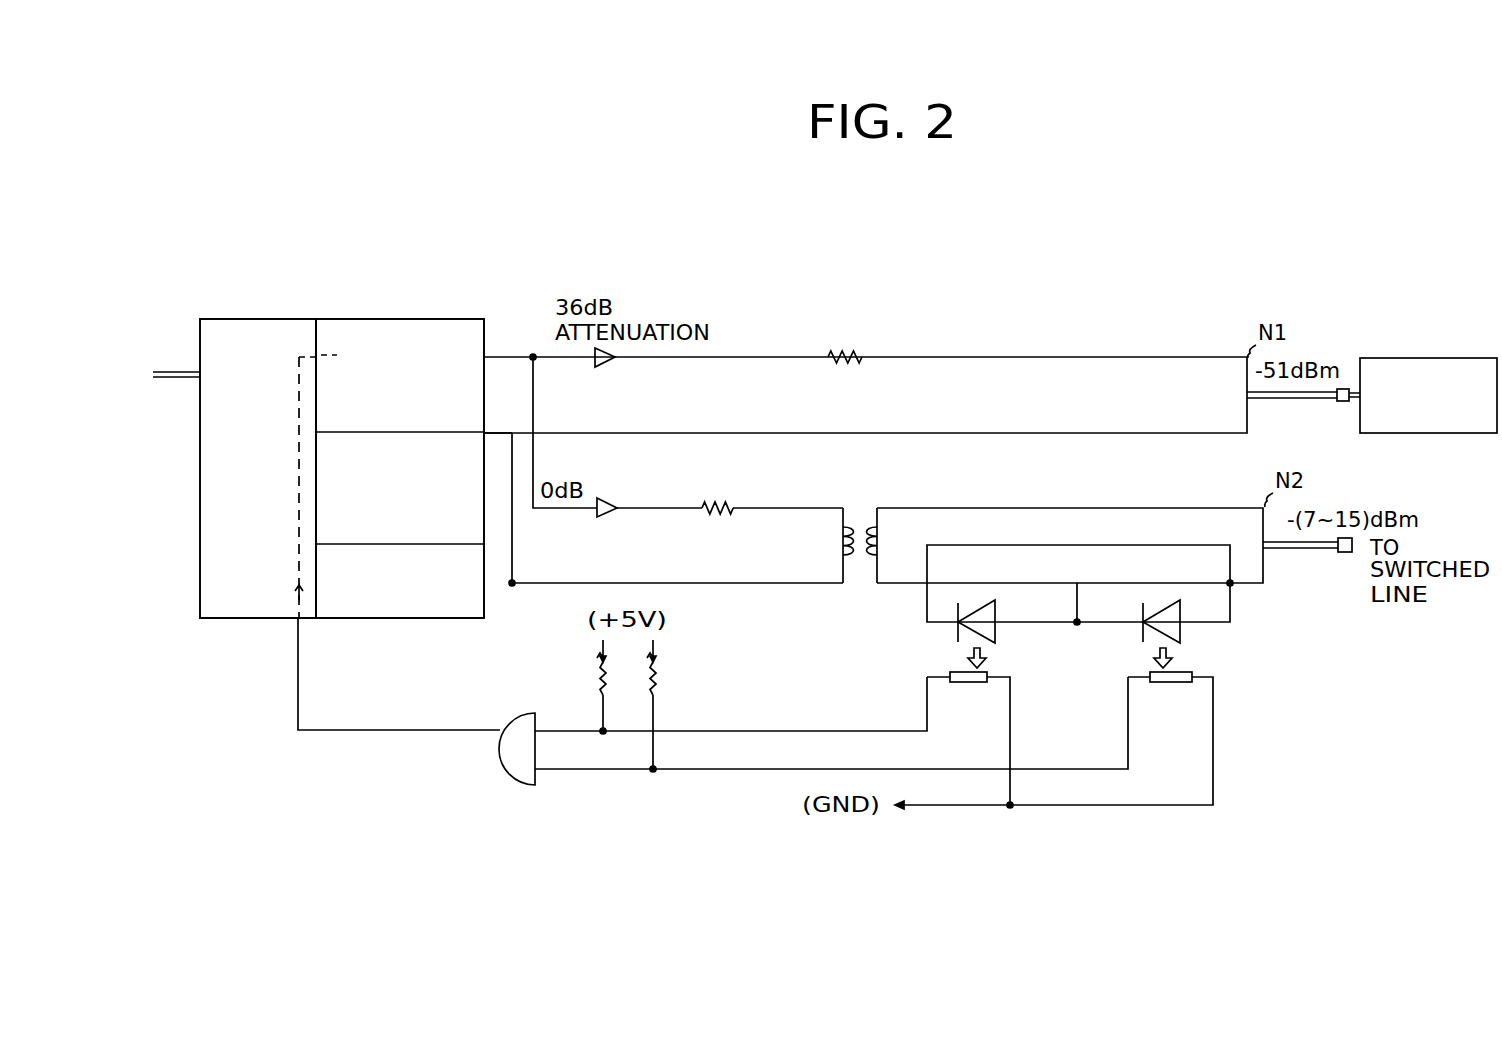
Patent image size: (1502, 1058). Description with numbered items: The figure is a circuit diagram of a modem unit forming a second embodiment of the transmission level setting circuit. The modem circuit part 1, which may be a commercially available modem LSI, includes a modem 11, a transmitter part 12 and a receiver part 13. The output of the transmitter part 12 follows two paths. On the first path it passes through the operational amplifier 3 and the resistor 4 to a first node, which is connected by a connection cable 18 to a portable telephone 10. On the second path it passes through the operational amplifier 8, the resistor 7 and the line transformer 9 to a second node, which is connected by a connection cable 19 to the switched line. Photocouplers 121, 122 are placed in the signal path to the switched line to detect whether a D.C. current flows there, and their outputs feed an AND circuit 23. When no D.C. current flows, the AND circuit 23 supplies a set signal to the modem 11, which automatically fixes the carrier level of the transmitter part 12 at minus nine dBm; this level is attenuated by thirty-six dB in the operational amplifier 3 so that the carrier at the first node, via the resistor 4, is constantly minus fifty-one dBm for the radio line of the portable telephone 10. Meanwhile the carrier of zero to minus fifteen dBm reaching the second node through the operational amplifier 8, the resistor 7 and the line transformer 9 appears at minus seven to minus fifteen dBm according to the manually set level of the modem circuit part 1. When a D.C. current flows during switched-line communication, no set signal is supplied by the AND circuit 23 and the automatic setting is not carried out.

The modem circuit part 1 is at (275, 620).
The operational amplifier 3 is at (604, 361).
The resistor 4 is at (837, 351).
The resistor 7 is at (712, 503).
The operational amplifier 8 is at (604, 516).
The line transformer 9 is at (860, 557).
The portable telephone 10 is at (1432, 358).
The modem 11 is at (279, 319).
The transmitter part 12 is at (420, 319).
The receiver part 13 is at (484, 448).
The connection cable 18 is at (1280, 404).
The connection cable 19 is at (1308, 556).
The AND circuit 23 is at (500, 758).
The photocoupler 121 is at (961, 641).
The photocoupler 122 is at (1184, 641).